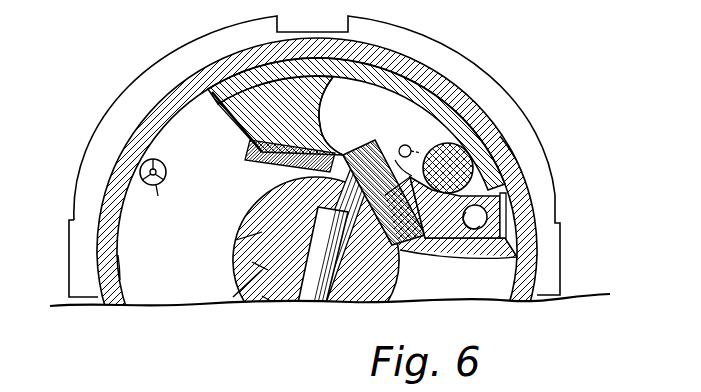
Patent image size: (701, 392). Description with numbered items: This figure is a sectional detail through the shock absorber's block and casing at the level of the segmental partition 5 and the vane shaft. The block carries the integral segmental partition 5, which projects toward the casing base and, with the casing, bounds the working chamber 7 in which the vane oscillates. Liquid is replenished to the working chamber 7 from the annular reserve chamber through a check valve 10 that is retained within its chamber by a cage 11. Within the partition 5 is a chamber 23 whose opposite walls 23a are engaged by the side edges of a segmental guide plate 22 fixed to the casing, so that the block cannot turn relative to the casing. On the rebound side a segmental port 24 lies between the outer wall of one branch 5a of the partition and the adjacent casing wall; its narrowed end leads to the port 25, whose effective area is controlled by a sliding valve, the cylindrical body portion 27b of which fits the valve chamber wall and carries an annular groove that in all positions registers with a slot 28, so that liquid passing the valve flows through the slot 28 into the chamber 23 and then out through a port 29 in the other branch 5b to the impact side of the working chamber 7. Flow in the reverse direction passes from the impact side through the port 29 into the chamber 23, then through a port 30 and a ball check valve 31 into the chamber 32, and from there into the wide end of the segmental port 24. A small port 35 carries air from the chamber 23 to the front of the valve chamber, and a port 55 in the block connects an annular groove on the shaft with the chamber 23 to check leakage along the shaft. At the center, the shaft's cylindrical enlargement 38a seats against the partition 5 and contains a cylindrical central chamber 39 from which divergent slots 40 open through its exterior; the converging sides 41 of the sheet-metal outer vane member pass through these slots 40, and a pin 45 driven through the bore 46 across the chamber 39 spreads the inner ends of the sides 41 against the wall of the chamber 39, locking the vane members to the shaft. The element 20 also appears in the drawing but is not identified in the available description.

The housing cover 20 is at (99, 141).
The segmental guide plate 22 is at (402, 72).
The port 25 is at (508, 137).
The opposite walls of chamber 23 23a is at (437, 127).
The branch of the segmental partition 5b is at (227, 118).
The chamber 23 is at (382, 100).
The port 29 is at (260, 165).
The chamber 39 is at (277, 222).
The cylindrical enlargement 38a is at (247, 240).
The divergent slots 40 is at (257, 267).
The sides 41 is at (233, 297).
The working chamber 7 is at (152, 279).
The pin 45 is at (298, 280).
The segmental partition 5 is at (323, 255).
The bore 46 is at (273, 307).
The port 55 is at (370, 157).
The port 30 is at (417, 250).
The branch of the segmental partition 5a is at (458, 247).
The ball check valve 31 is at (483, 262).
The chamber 32 is at (500, 185).
The segmental port 24 is at (500, 213).
The cylindrical body portion 27b is at (473, 117).
The slot 28 is at (401, 146).
The port 35 is at (413, 153).
The check valve 10 is at (172, 166).
The cage 11 is at (157, 186).